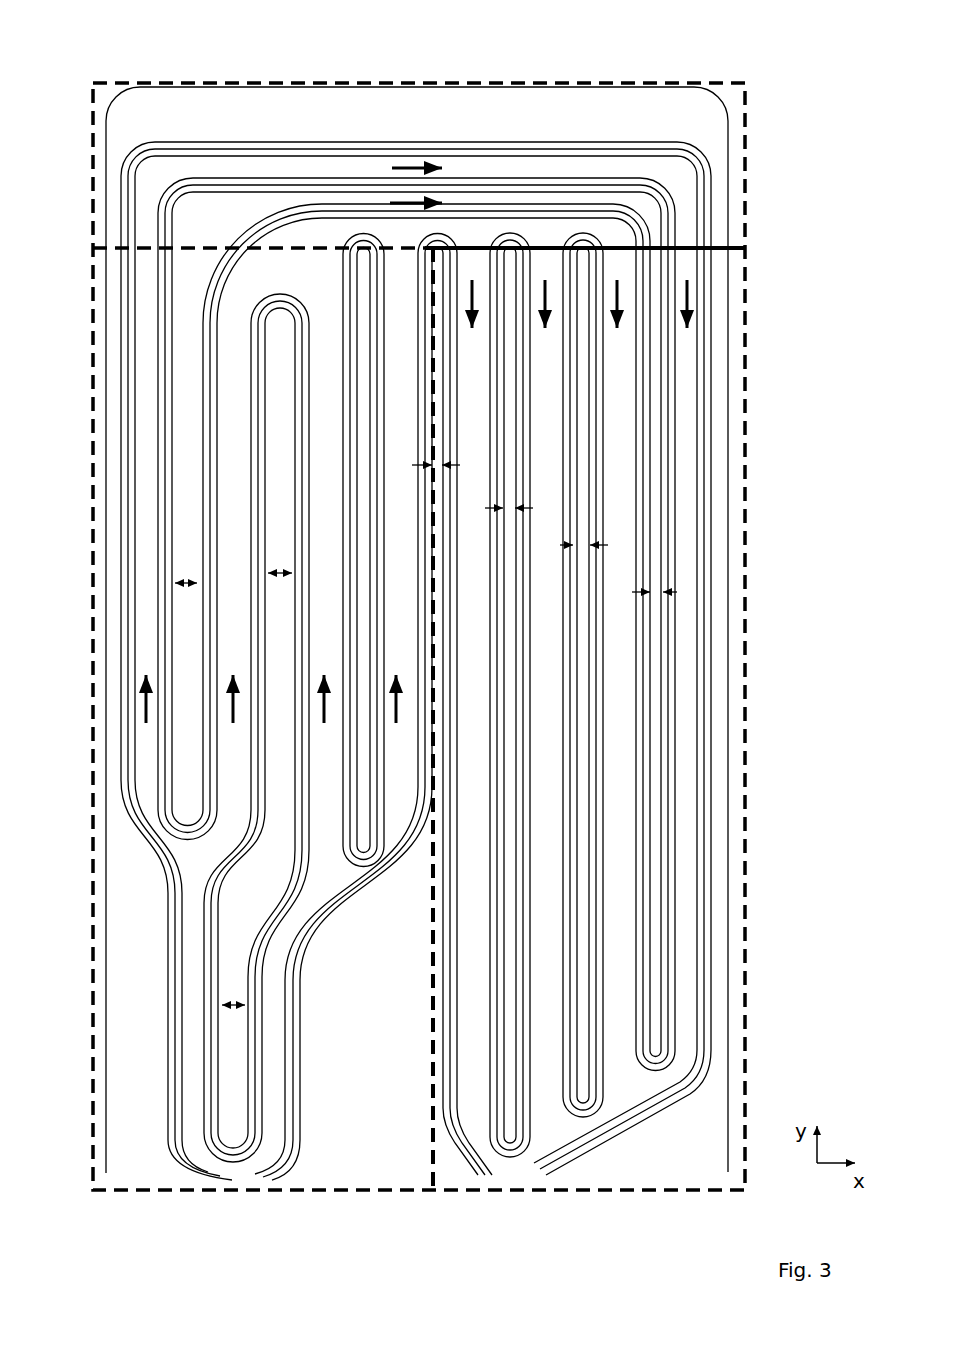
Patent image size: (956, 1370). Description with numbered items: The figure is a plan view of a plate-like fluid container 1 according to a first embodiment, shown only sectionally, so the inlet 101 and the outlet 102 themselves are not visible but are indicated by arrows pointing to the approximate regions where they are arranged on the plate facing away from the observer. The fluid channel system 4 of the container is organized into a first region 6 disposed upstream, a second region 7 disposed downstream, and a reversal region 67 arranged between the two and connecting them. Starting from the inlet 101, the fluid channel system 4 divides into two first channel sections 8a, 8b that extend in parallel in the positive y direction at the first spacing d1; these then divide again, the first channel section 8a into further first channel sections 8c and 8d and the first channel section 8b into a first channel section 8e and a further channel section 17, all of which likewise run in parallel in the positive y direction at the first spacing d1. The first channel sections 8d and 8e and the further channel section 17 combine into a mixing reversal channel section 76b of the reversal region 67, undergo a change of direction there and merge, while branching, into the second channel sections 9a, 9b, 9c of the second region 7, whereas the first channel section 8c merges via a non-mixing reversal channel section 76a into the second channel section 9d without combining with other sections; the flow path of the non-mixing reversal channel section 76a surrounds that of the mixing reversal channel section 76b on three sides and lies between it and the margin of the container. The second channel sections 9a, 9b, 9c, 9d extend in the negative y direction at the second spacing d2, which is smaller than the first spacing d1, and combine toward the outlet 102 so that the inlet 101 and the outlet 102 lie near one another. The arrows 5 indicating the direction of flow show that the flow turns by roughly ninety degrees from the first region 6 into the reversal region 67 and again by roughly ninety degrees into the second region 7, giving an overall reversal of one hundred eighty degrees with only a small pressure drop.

The fluid container 1 is at (728, 1000).
The fluid channel system 4 is at (215, 128).
The arrows 5 is at (423, 200).
The first region 6 is at (93, 750).
The second region 7 is at (748, 360).
The further channel section 17 is at (405, 400).
The reversal region 67 is at (748, 175).
The non-mixing reversal channel section 76a is at (353, 172).
The mixing reversal channel section 76b is at (328, 196).
The first channel section 8a is at (187, 997).
The first channel section 8b is at (277, 1060).
The first channel section 8c is at (145, 507).
The first channel section 8d is at (228, 478).
The first channel section 8e is at (325, 463).
The second channel section 9a is at (477, 853).
The second channel section 9b is at (553, 868).
The second channel section 9c is at (622, 888).
The second channel section 9d is at (685, 893).
The inlet 101 is at (233, 1162).
The outlet 102 is at (507, 1165).
The first spacing d1 is at (188, 590).
The second spacing d2 is at (460, 465).